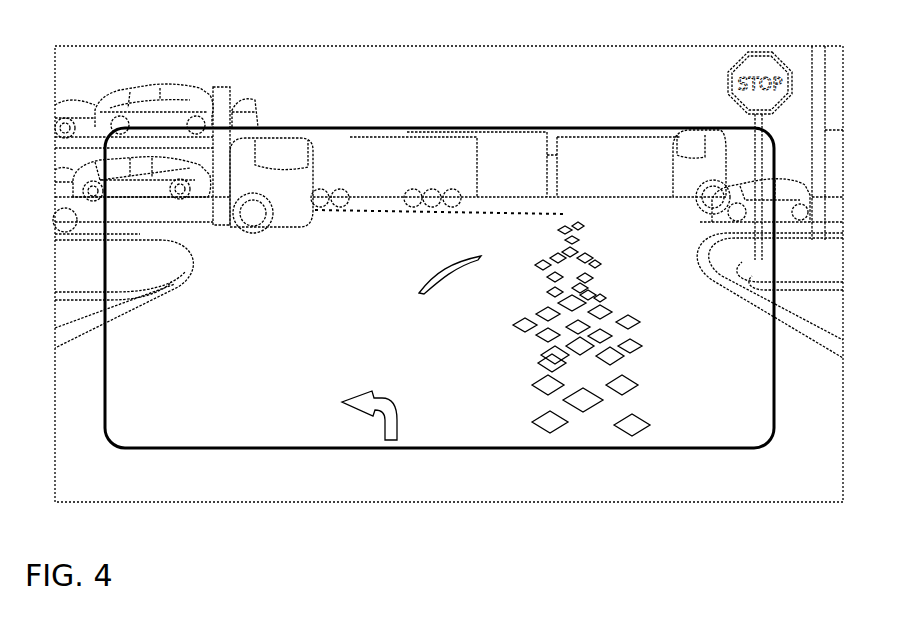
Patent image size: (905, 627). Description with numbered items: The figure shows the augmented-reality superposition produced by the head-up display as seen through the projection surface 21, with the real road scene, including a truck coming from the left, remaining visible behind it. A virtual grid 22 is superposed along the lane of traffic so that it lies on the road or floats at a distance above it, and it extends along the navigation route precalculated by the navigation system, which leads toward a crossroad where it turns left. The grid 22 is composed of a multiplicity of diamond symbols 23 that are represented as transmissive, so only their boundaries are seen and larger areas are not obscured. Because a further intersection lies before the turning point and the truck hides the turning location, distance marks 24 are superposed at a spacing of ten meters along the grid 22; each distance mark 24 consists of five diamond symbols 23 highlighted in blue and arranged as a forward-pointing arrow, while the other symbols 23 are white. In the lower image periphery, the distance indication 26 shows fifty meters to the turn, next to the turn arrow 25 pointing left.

The projection surface 21 is at (553, 127).
The grid 22 is at (606, 426).
The diamond symbol 23 is at (624, 399).
The distance mark 24 is at (565, 226).
The turn arrow 25 is at (390, 440).
The distance indication 26 is at (468, 438).